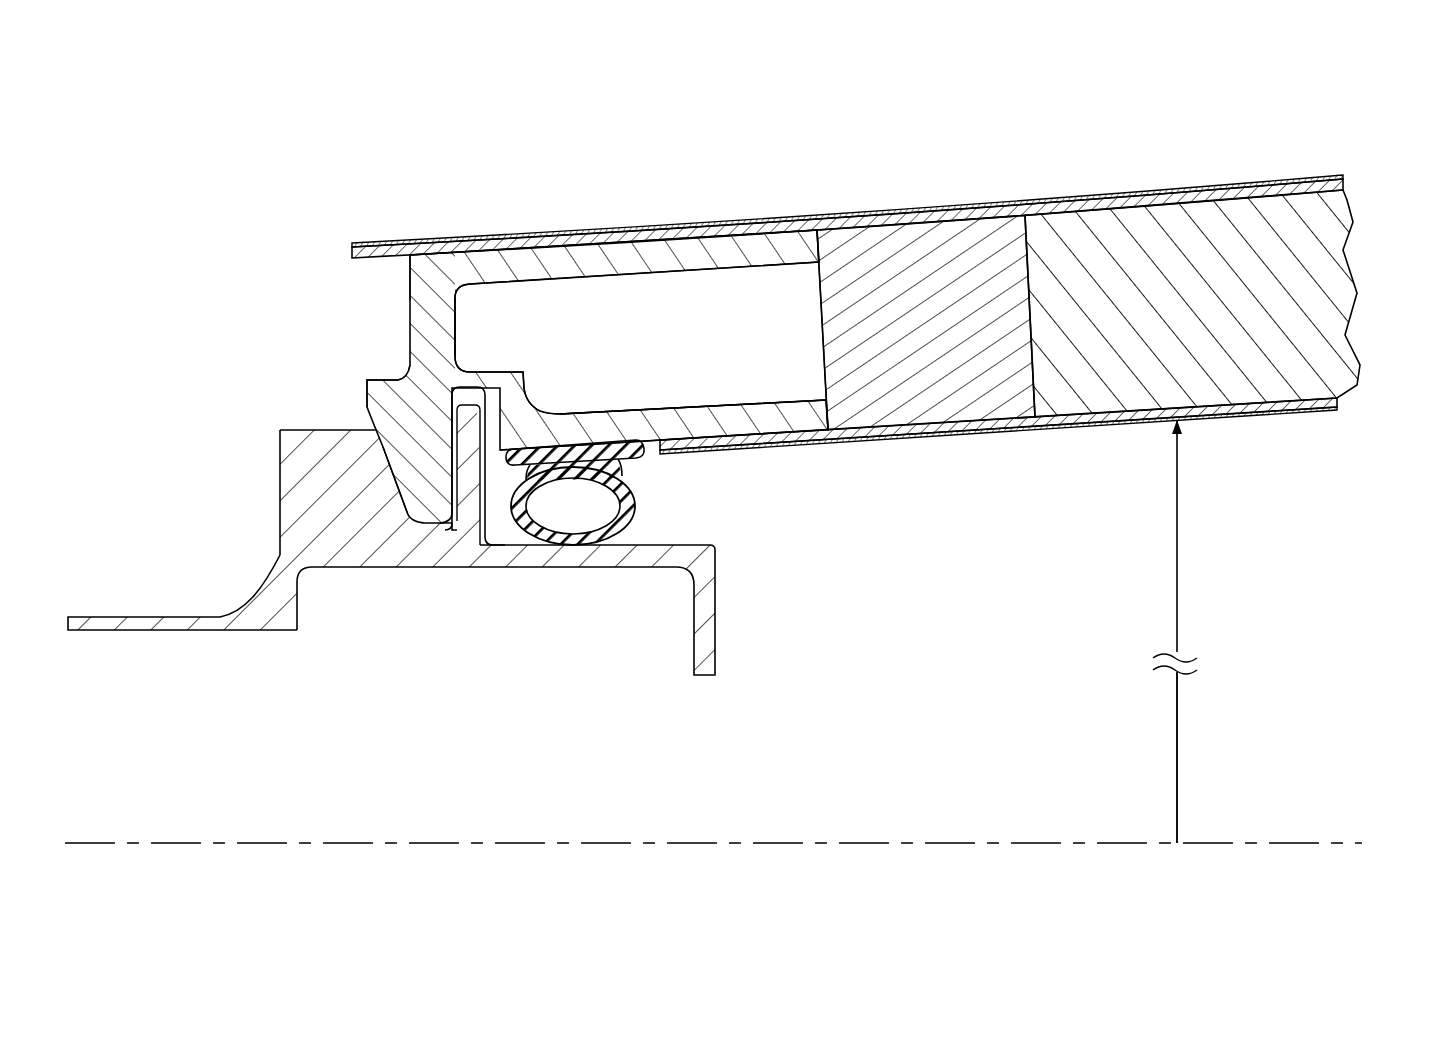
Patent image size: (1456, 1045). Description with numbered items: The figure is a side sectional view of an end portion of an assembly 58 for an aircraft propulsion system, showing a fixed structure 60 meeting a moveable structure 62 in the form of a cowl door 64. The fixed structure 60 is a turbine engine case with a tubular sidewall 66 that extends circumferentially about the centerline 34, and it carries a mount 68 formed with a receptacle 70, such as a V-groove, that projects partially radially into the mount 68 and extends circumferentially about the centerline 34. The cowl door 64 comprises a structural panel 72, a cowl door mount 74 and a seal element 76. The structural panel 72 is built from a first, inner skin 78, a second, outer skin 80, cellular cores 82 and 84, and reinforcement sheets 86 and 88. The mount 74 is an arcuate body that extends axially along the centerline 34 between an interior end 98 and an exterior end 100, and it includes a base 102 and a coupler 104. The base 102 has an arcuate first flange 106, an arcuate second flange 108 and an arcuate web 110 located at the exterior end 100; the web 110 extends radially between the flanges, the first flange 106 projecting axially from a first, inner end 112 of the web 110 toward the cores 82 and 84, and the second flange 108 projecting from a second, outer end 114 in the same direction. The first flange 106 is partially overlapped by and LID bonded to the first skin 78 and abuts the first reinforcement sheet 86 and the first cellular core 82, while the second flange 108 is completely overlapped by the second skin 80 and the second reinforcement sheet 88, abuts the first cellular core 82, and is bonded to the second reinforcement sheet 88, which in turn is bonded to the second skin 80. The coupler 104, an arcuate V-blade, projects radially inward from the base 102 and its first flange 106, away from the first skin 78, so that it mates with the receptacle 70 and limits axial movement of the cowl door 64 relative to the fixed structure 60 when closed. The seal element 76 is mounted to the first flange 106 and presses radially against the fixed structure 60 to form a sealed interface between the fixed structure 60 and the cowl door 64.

The centerline 34 is at (1350, 836).
The assembly 58 is at (295, 127).
The fixed structure 60 is at (391, 564).
The moveable structure 62 is at (847, 177).
The cowl door 64 is at (866, 207).
The sidewall 66 is at (217, 631).
The mount 68 is at (280, 470).
The receptacle 70 is at (438, 529).
The structural panel 72 is at (894, 318).
The cowl door mount 74 is at (400, 316).
The seal element 76 is at (643, 502).
The first skin 78 is at (952, 445).
The second skin 80 is at (1003, 199).
The first cellular core 82 is at (882, 408).
The second cellular core 84 is at (1333, 369).
The first reinforcement sheet 86 is at (990, 428).
The second reinforcement sheet 88 is at (847, 183).
The interior end 98 is at (821, 252).
The exterior end 100 is at (366, 391).
The base 102 is at (400, 292).
The coupler 104 is at (390, 478).
The first flange 106 is at (713, 401).
The second flange 108 is at (642, 276).
The web 110 is at (458, 332).
The first end 112 is at (408, 370).
The second end 114 is at (452, 268).